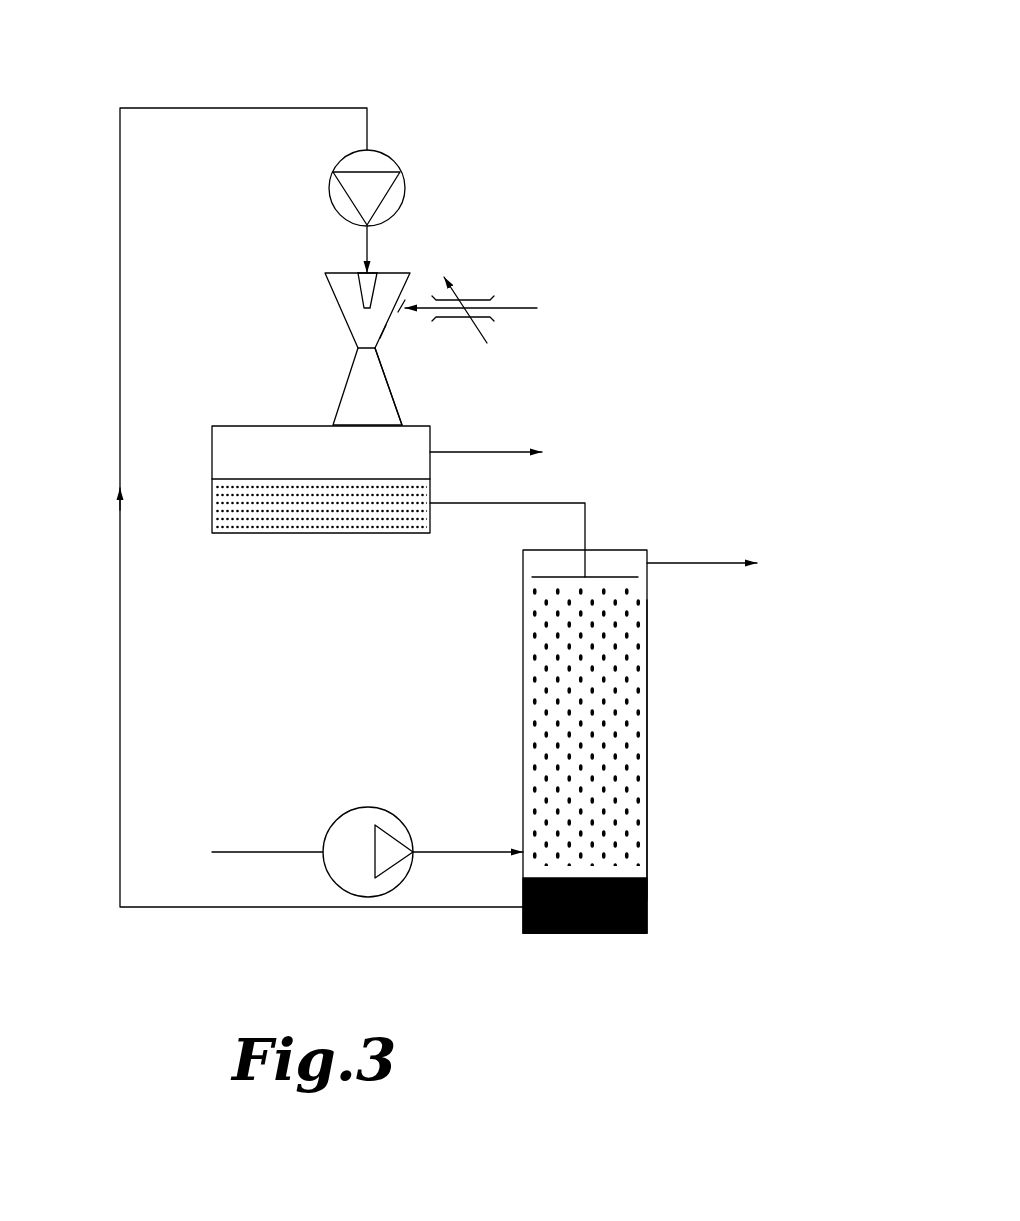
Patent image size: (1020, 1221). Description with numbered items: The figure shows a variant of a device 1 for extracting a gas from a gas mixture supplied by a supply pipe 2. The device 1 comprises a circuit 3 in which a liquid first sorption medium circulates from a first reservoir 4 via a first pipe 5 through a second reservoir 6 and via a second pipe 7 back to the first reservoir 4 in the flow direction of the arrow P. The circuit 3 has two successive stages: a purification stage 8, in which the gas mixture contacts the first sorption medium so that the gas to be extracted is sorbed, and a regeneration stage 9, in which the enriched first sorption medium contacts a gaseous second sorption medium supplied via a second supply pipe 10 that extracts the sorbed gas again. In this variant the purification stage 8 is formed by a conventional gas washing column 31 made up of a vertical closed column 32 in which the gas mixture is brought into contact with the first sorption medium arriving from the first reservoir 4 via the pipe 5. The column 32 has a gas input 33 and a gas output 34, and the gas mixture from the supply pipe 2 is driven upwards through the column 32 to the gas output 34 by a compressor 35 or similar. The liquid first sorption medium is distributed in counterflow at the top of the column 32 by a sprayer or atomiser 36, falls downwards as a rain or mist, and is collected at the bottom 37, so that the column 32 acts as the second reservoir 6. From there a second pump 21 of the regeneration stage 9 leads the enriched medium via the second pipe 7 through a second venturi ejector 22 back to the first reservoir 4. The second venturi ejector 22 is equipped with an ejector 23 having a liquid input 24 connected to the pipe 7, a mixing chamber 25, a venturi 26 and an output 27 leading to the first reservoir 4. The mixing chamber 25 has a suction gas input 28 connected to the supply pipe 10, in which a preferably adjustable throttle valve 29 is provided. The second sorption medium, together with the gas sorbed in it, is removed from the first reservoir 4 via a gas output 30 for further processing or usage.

The device 1 is at (697, 80).
The supply pipe 2 is at (248, 852).
The circuit 3 is at (180, 70).
The first reservoir 4 is at (212, 452).
The first pipe 5 is at (585, 525).
The second reservoir 6 is at (612, 933).
The second pipe 7 is at (120, 800).
The purification stage 8 is at (795, 506).
The regeneration stage 9 is at (510, 212).
The second supply pipe 10 is at (520, 308).
The second pump 21 is at (395, 163).
The second venturi ejector 22 is at (325, 347).
The ejector 23 is at (365, 292).
The liquid input 24 is at (368, 273).
The mixing chamber 25 is at (378, 330).
The venturi 26 is at (358, 348).
The output 27 is at (373, 425).
The suction gas input 28 is at (402, 308).
The throttle valve 29 is at (493, 322).
The gas output 30 is at (440, 452).
The gas washing column 31 is at (647, 720).
The vertical closed column 32 is at (647, 825).
The gas input 33 is at (505, 855).
The gas output 34 is at (655, 563).
The compressor 35 is at (397, 822).
The sprayer or atomiser 36 is at (605, 577).
The bottom 37 is at (585, 933).